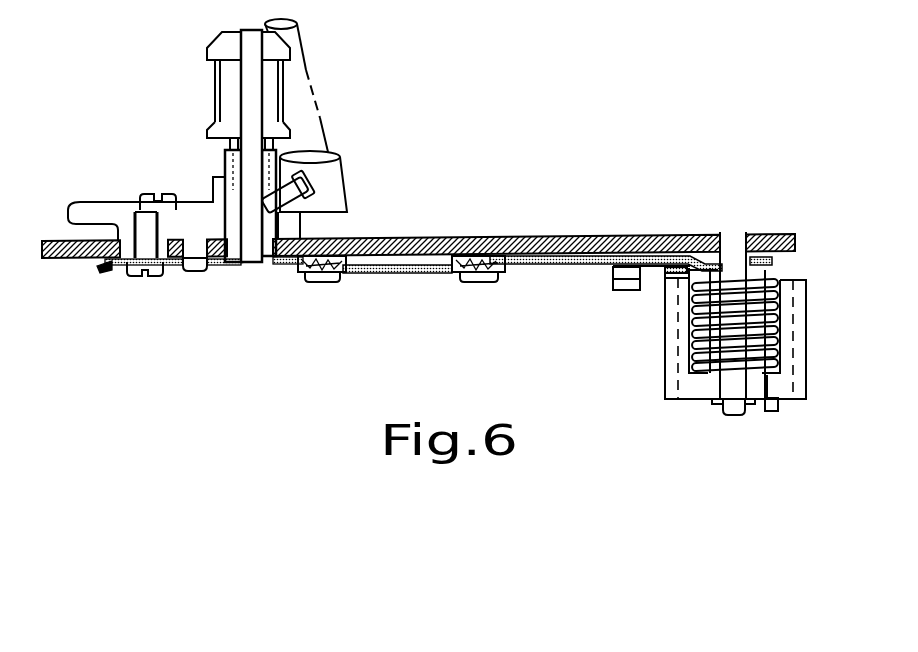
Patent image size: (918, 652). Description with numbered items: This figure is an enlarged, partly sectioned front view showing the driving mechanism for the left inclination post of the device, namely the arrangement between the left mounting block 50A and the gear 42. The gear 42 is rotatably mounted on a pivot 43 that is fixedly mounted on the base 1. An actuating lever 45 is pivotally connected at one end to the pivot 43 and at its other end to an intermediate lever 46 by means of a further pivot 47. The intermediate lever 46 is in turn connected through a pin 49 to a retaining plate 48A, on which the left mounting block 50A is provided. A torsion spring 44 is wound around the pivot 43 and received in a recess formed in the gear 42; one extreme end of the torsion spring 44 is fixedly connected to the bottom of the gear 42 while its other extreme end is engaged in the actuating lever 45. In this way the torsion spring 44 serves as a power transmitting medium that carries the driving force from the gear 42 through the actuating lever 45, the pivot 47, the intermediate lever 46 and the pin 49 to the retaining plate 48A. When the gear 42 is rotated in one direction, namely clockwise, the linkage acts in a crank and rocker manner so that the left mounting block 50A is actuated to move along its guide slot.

The base 1 is at (543, 237).
The gear 42 is at (702, 386).
The pivot 43 is at (731, 240).
The torsion spring 44 is at (768, 413).
The actuating lever 45 is at (574, 265).
The intermediate lever 46 is at (394, 275).
The pivot 47 is at (486, 284).
The retaining plate 48A is at (119, 263).
The pin 49 is at (318, 284).
The left mounting block 50A is at (100, 212).